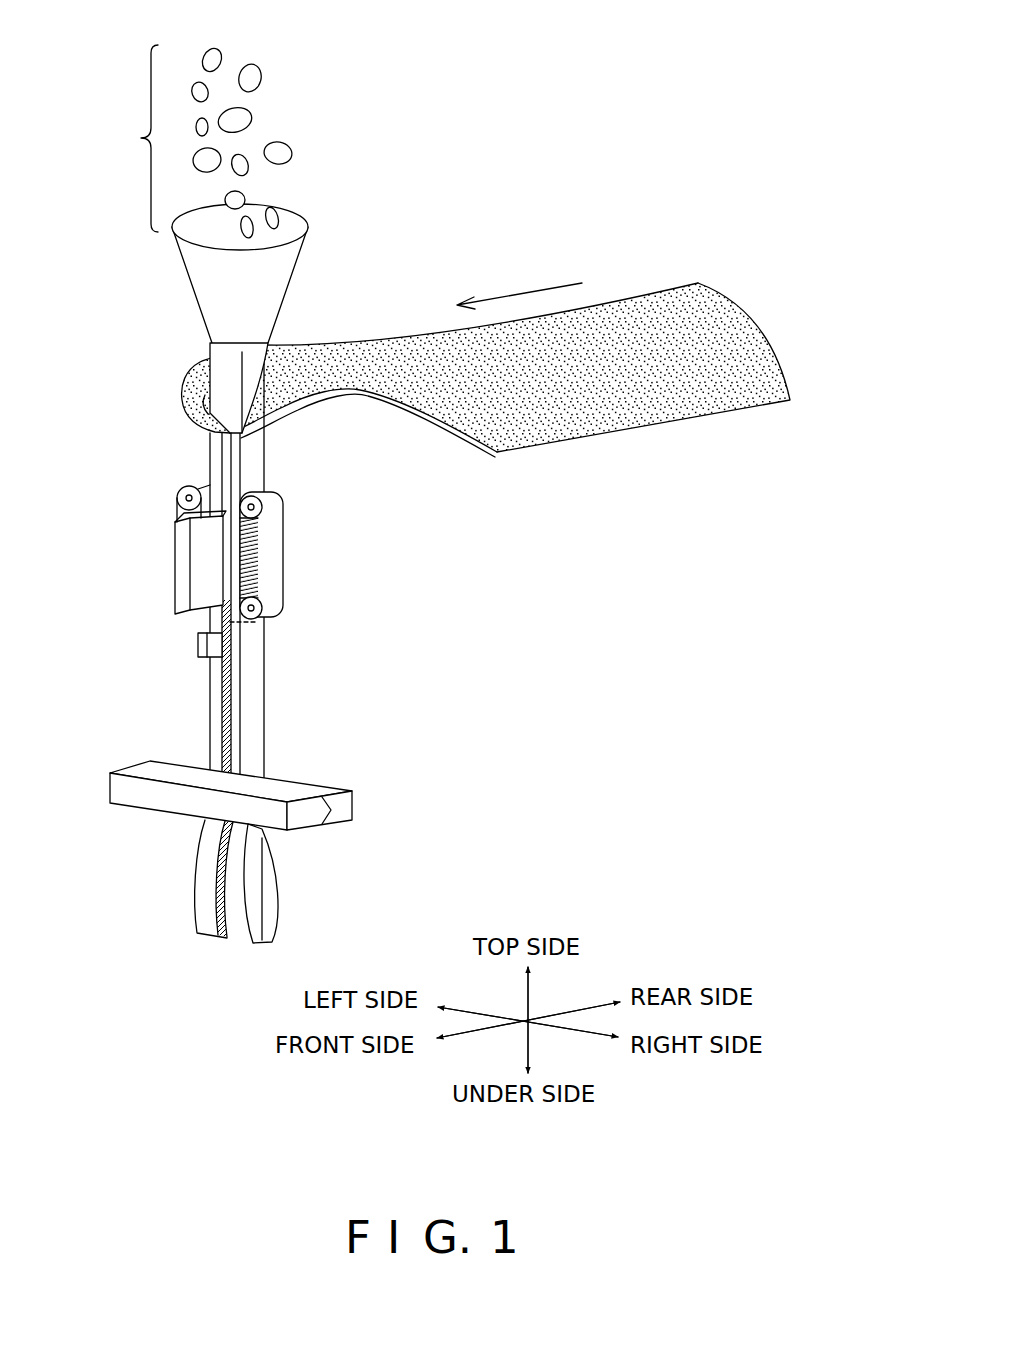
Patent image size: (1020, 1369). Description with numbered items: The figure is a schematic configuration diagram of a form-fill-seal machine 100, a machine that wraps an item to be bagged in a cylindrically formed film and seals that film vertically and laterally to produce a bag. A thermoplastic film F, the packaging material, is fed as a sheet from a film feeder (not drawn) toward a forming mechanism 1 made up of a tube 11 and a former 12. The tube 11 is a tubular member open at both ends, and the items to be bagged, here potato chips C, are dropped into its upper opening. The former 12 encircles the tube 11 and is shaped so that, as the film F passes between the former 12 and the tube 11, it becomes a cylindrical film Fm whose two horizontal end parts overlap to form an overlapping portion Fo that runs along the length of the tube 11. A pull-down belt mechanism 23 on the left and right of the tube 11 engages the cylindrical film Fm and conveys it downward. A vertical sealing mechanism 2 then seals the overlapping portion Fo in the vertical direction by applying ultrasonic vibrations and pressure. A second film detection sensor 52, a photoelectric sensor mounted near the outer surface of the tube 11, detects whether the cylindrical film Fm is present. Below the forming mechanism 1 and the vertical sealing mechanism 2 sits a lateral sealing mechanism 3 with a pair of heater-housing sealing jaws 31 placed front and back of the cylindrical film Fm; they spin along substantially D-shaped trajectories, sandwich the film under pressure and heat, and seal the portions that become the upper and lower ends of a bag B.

The form-fill-seal machine 100 is at (418, 122).
The forming mechanism 1 is at (388, 468).
The tube 11 is at (252, 445).
The former 12 is at (373, 393).
The vertical sealing mechanism 2 is at (176, 562).
The pull-down belt mechanism 23 is at (205, 492).
The second film detection sensor 52 is at (198, 645).
The lateral sealing mechanism 3 is at (366, 803).
The sealing jaws 31 is at (328, 790).
The bag B is at (267, 887).
The potato chips C is at (201, 138).
The film F is at (658, 318).
The overlapping portion Fo is at (227, 658).
The cylindrical film Fm is at (247, 708).